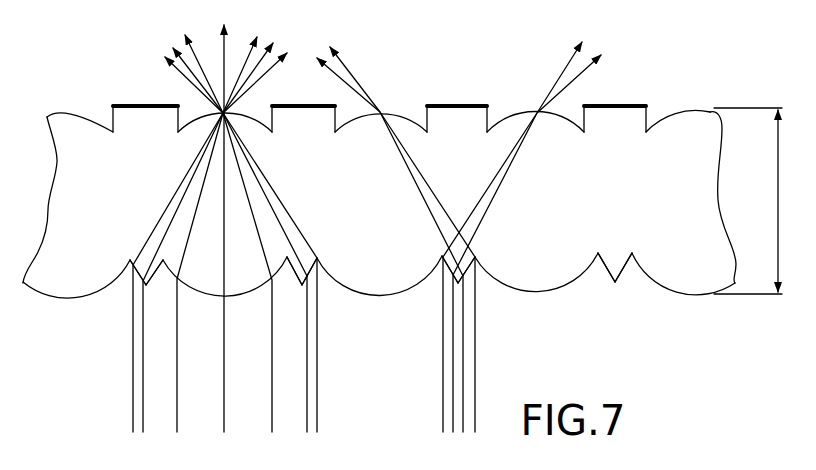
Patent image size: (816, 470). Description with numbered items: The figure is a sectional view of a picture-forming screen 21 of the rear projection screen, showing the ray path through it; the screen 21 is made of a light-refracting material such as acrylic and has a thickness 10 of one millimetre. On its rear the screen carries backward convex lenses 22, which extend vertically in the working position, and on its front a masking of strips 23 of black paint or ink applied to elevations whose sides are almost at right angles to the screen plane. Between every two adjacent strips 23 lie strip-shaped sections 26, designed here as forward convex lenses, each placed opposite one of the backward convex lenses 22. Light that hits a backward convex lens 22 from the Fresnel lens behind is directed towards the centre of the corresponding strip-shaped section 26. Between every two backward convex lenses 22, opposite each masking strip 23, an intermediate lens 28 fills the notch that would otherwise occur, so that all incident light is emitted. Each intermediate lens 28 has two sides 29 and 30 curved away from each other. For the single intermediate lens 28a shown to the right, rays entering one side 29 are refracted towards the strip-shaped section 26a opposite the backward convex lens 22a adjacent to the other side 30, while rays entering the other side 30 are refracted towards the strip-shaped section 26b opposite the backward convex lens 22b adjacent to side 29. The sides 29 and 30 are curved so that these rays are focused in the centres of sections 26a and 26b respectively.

The lens sheet thickness 10 is at (748, 201).
The picture-forming screen 21 is at (53, 205).
The backward convex lenses 22 is at (208, 284).
The backward convex lens 22a is at (566, 290).
The backward convex lens 22b is at (410, 284).
The masking strips 23 is at (153, 104).
The strip-shaped sections 26 is at (90, 113).
The strip-shaped section 26a is at (521, 116).
The strip-shaped section 26b is at (402, 117).
The intermediate lenses 28 is at (146, 287).
The intermediate lens 28a is at (458, 283).
The side of intermediate lens 29 is at (128, 260).
The side of intermediate lens 30 is at (162, 259).